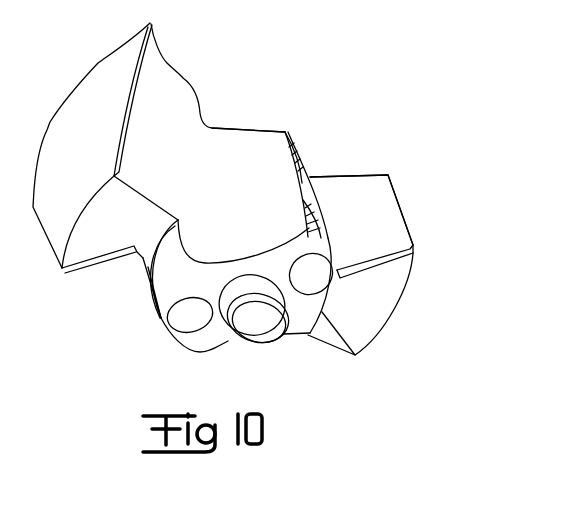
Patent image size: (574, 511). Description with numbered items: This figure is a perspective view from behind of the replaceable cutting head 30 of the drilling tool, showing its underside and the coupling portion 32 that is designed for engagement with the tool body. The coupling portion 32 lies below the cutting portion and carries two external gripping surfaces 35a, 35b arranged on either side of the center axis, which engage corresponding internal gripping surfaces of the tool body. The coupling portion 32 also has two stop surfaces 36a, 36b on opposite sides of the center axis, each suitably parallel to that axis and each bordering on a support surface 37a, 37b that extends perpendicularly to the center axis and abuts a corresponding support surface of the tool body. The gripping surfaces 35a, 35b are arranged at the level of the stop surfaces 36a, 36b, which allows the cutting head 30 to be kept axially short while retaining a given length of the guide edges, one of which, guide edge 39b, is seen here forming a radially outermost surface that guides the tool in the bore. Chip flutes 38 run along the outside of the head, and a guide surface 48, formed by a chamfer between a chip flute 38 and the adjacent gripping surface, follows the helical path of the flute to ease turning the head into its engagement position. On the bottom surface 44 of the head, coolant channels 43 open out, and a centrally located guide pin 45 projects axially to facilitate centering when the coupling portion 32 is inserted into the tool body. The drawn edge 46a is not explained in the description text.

The cutting head 30 is at (325, 51).
The coupling portion 32 is at (409, 183).
The external gripping surface 35a is at (317, 203).
The external gripping surface 35b is at (142, 267).
The stop surface 36a is at (387, 223).
The stop surface 36b is at (80, 273).
The support surface 37a is at (390, 286).
The support surface 37b is at (117, 210).
The chip flute 38 is at (227, 143).
The guide edge 39b is at (126, 97).
The coolant channel 43 is at (177, 323).
The bottom surface 44 is at (218, 340).
The guide pin 45 is at (265, 328).
The top edge 46a is at (363, 170).
The guide surface 48 is at (305, 192).